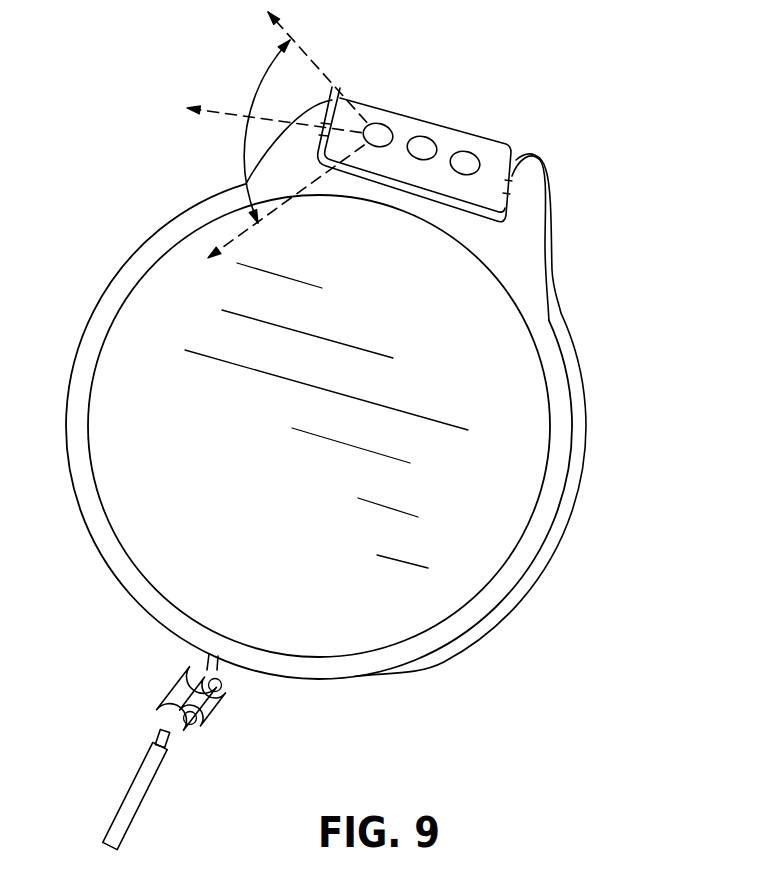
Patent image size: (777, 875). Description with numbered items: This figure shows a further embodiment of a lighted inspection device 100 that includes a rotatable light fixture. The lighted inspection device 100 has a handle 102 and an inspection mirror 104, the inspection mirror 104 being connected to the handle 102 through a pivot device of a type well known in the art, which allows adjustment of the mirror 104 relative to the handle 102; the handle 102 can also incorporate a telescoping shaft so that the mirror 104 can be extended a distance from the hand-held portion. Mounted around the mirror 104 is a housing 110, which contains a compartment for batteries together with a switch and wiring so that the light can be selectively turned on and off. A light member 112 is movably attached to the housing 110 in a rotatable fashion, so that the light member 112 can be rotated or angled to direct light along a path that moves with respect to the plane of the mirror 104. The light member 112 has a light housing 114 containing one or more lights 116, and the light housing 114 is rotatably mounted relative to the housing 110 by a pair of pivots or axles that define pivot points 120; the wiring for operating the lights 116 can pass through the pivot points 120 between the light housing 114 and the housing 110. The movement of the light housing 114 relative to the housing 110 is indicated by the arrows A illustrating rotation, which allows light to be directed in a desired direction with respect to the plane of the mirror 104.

The lighted inspection device 100 is at (622, 183).
The handle 102 is at (133, 795).
The inspection mirror 104 is at (530, 450).
The housing 110 is at (580, 360).
The light member 112 is at (492, 90).
The light housing 114 is at (405, 107).
The lights 116 is at (395, 127).
The pivot points 120 is at (338, 88).
The arrows A is at (242, 143).